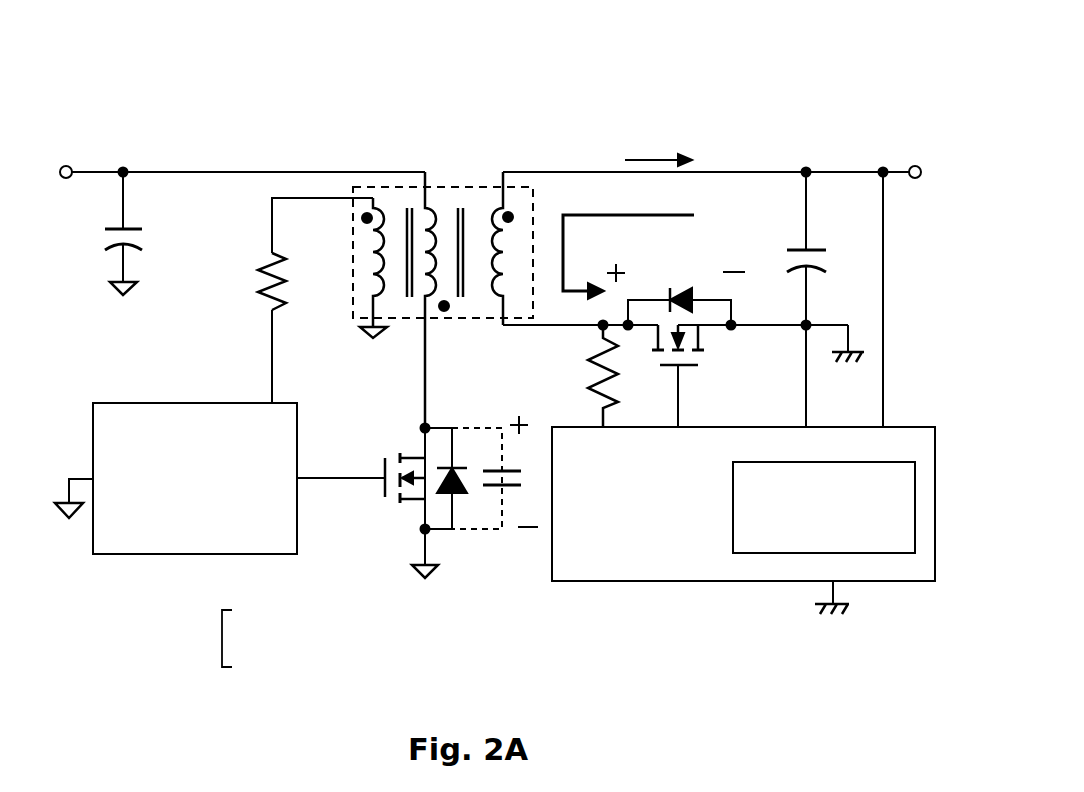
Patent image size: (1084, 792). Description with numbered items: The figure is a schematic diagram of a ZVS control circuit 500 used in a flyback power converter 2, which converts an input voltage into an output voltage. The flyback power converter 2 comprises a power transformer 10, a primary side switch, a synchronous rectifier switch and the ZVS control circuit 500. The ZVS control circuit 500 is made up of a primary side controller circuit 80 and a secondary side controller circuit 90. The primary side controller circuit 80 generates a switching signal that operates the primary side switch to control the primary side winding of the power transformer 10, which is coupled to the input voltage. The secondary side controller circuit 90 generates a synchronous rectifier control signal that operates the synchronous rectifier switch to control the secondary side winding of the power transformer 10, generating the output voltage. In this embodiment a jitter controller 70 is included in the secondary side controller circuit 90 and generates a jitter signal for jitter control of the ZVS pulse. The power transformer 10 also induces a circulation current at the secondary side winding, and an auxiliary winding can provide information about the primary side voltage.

The flyback power converter 2 is at (183, 63).
The power transformer 10 is at (540, 198).
The primary side controller circuit 80 is at (177, 538).
The secondary side controller circuit 90 is at (568, 565).
The jitter controller 70 is at (752, 543).
The ZVS control circuit 500 is at (222, 638).